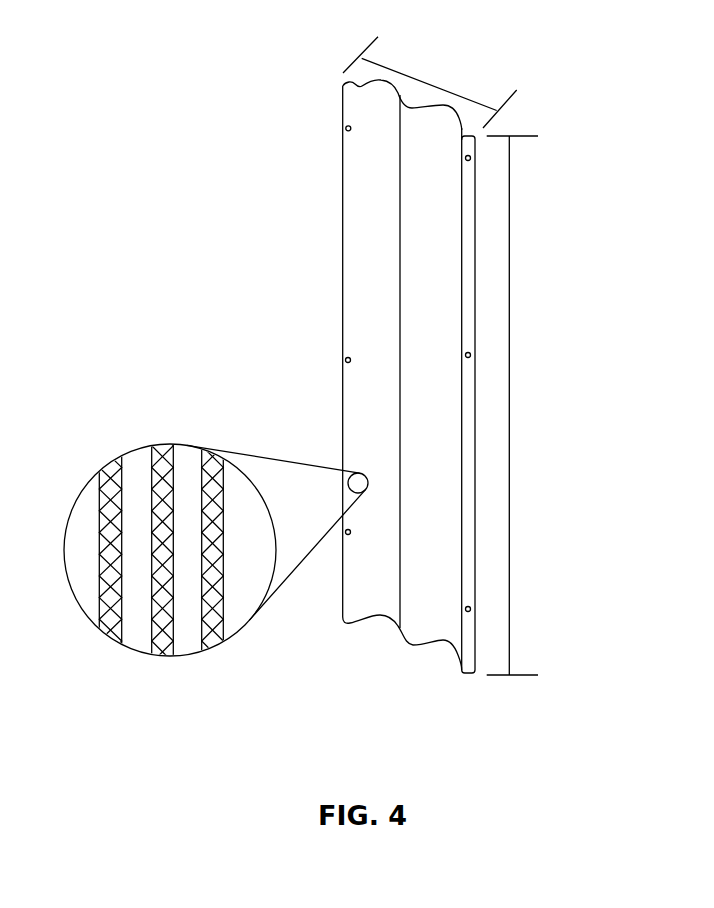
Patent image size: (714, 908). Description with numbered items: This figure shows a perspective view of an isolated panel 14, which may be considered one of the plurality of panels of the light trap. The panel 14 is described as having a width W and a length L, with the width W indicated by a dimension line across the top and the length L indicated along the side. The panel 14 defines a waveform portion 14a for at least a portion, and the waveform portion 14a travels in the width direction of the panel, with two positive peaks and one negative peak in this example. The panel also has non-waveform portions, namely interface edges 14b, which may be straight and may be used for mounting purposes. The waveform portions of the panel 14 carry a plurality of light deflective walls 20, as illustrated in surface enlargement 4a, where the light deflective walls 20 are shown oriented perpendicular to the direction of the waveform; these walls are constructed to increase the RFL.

The panel 14 is at (369, 390).
The waveform portion 14a is at (367, 238).
The interface edge 14b is at (350, 83).
The light deflective walls 20 is at (211, 565).
The surface enlargement 4a is at (148, 650).
The width W is at (423, 82).
The length L is at (510, 348).